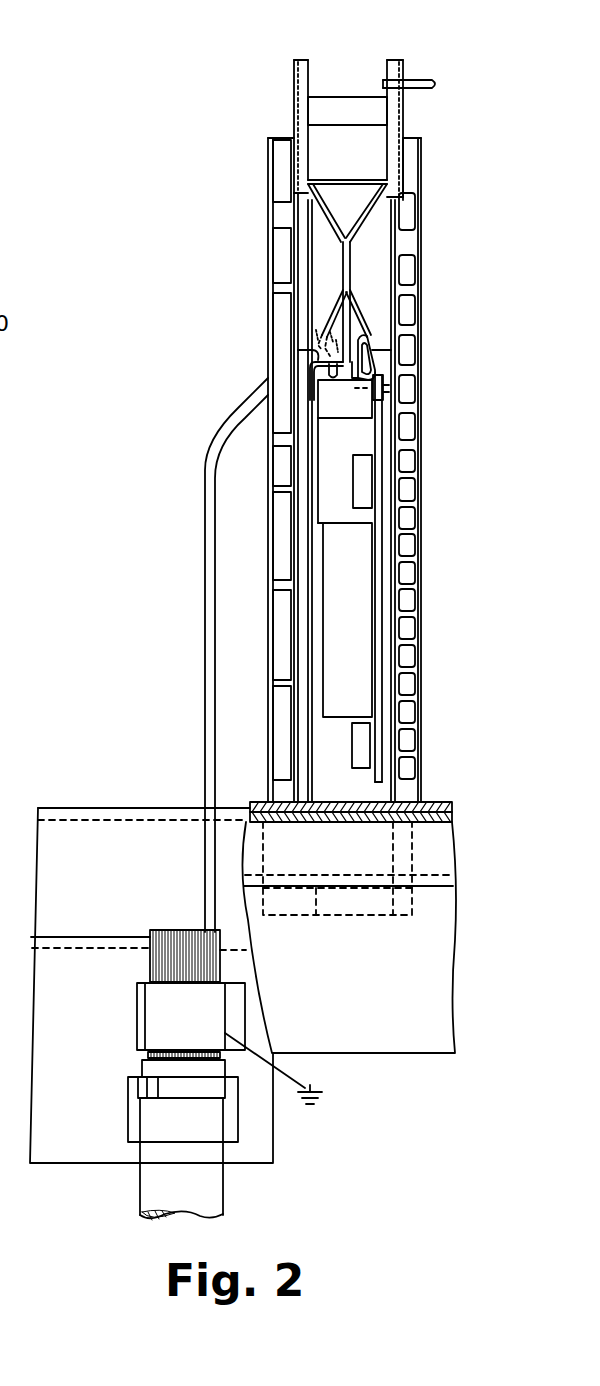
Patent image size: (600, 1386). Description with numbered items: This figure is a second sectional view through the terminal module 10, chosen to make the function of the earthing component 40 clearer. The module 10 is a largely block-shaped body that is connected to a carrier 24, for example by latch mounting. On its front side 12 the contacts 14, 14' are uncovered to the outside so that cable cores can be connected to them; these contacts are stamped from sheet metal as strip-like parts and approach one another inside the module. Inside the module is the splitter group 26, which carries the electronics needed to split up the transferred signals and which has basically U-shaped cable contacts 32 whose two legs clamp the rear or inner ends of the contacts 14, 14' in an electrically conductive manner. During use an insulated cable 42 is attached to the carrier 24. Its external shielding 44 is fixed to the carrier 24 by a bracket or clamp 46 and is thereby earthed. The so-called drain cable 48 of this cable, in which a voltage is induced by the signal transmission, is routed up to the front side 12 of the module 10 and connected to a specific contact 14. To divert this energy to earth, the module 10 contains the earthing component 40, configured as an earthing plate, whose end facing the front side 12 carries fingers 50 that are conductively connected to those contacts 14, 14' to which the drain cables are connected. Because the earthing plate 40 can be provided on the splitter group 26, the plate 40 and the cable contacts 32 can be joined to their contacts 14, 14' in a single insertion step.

The terminal module 10 is at (189, 253).
The front side 12 is at (349, 72).
The contact 14 is at (281, 213).
The contact 14' is at (406, 213).
The carrier 24 is at (52, 867).
The splitter group 26 is at (362, 638).
The cable contact 32 is at (370, 365).
The earthing component 40 is at (311, 548).
The insulated cable 42 is at (213, 1198).
The external shielding 44 is at (167, 930).
The bracket or clamp 46 is at (210, 1010).
The drain cable 48 is at (416, 84).
The fingers 50 is at (346, 320).